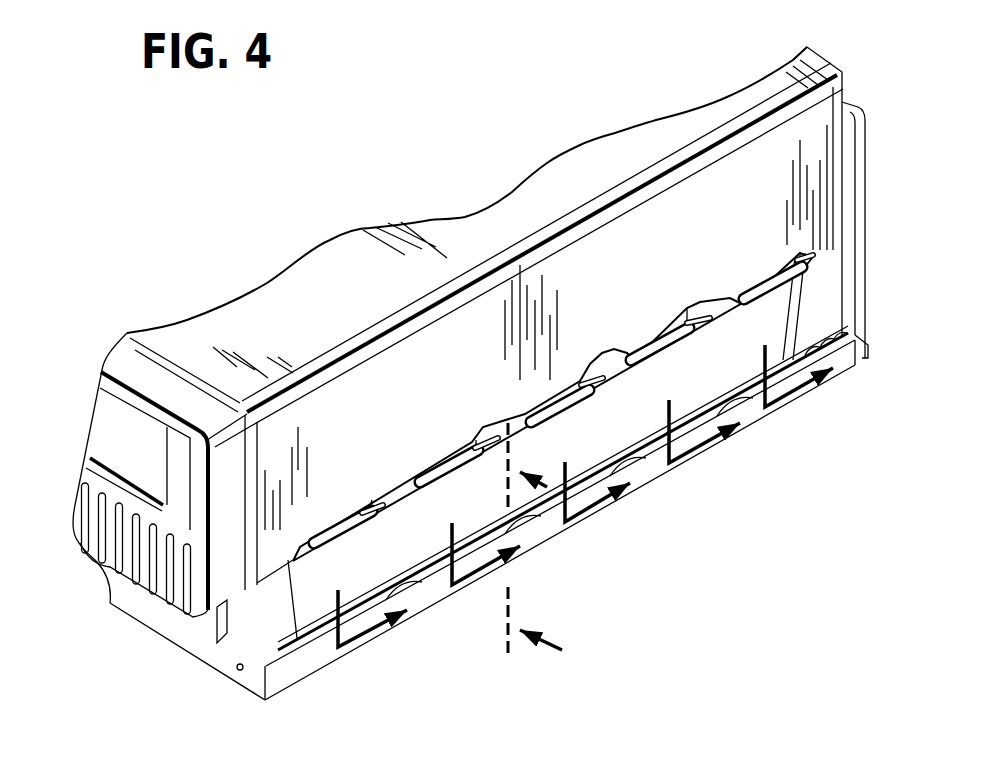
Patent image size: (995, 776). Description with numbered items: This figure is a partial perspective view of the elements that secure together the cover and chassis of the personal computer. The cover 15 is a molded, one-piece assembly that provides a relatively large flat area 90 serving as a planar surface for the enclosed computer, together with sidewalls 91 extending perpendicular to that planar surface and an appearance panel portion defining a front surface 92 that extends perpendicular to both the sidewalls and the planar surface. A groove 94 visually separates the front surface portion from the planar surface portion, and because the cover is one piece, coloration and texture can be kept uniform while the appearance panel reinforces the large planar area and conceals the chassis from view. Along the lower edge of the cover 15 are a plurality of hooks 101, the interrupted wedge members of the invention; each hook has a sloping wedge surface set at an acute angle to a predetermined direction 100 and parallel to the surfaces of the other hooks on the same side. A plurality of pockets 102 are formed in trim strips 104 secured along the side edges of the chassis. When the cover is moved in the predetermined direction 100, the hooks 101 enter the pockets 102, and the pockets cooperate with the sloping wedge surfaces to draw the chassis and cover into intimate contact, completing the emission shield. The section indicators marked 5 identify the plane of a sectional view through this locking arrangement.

The cover 15 is at (214, 300).
The flat area 90 is at (333, 263).
The sidewalls 91 is at (822, 117).
The front surface 92 is at (127, 397).
The groove 94 is at (124, 324).
The predetermined direction 100 is at (648, 40).
The hooks 101 is at (378, 515).
The pockets 102 is at (361, 592).
The trim strips 104 is at (313, 665).
The section line 5- 5 is at (536, 540).